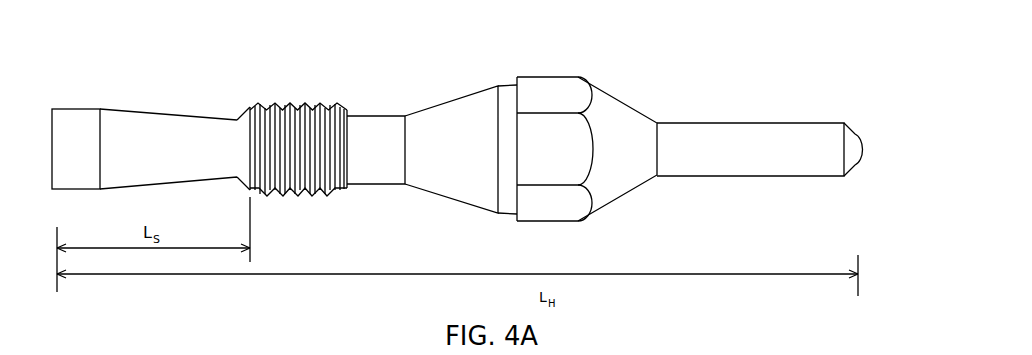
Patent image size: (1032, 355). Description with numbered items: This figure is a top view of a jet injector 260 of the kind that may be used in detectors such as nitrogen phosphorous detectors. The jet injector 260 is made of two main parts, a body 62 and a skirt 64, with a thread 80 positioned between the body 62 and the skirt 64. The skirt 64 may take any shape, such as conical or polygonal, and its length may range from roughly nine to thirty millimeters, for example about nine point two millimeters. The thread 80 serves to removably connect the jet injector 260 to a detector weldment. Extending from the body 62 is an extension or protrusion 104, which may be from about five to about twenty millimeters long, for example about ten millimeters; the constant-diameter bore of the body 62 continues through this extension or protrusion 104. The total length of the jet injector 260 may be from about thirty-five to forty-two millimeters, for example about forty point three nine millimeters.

The skirt 64 is at (157, 102).
The thread 80 is at (290, 103).
The body 62 is at (551, 88).
The jet injector 260 is at (664, 75).
The extension or protrusion 104 is at (755, 123).